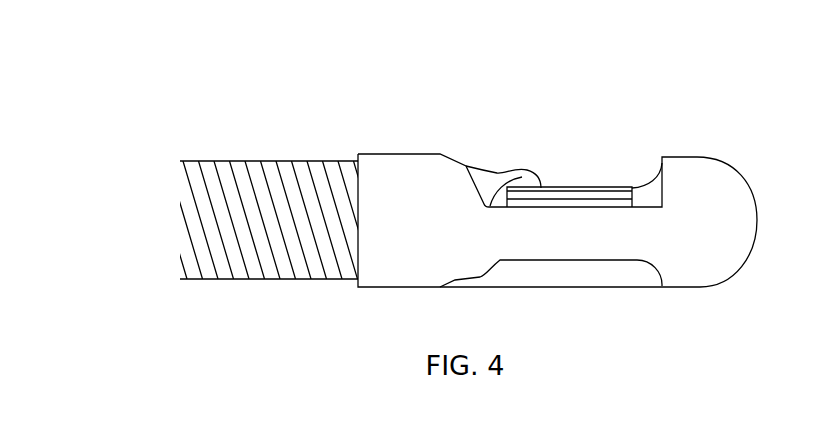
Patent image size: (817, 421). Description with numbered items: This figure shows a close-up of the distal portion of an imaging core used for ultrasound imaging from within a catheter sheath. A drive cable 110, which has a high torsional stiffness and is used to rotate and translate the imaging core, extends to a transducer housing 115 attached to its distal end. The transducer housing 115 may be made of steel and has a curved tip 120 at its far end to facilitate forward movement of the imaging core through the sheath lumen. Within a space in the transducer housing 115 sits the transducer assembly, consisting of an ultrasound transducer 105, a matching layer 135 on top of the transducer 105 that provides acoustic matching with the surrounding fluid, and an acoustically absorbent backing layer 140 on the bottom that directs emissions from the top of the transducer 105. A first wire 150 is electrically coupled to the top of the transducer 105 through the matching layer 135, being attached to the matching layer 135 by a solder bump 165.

The ultrasound transducer 105 is at (604, 190).
The drive cable 110 is at (322, 252).
The transducer housing 115 is at (687, 142).
The curved tip 120 is at (715, 158).
The matching layer 135 is at (582, 186).
The backing layer 140 is at (582, 187).
The first wire 150 is at (497, 172).
The solder bump 165 is at (523, 178).